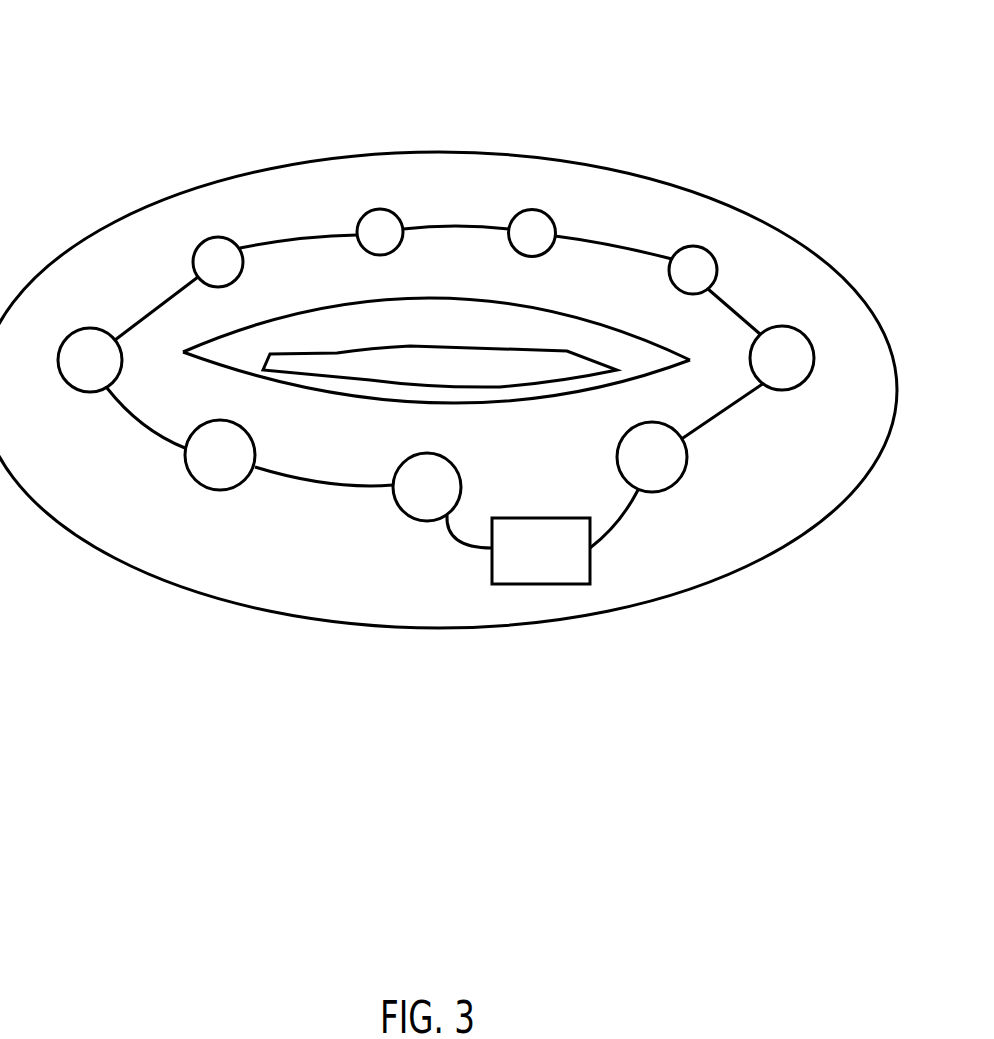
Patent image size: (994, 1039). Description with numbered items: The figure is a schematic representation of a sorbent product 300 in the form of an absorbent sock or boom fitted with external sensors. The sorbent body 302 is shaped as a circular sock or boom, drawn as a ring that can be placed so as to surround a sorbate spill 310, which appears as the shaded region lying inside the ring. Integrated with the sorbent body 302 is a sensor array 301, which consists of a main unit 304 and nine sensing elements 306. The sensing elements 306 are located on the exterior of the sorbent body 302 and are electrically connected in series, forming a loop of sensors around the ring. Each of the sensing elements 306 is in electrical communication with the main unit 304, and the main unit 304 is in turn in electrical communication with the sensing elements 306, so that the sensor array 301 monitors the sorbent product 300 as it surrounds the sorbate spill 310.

The sorbent product 300 is at (170, 80).
The sensor array 301 is at (451, 198).
The sorbent body 302 is at (515, 153).
The main unit 304 is at (541, 551).
The sensing elements 306 is at (700, 243).
The sorbate spill 310 is at (430, 350).